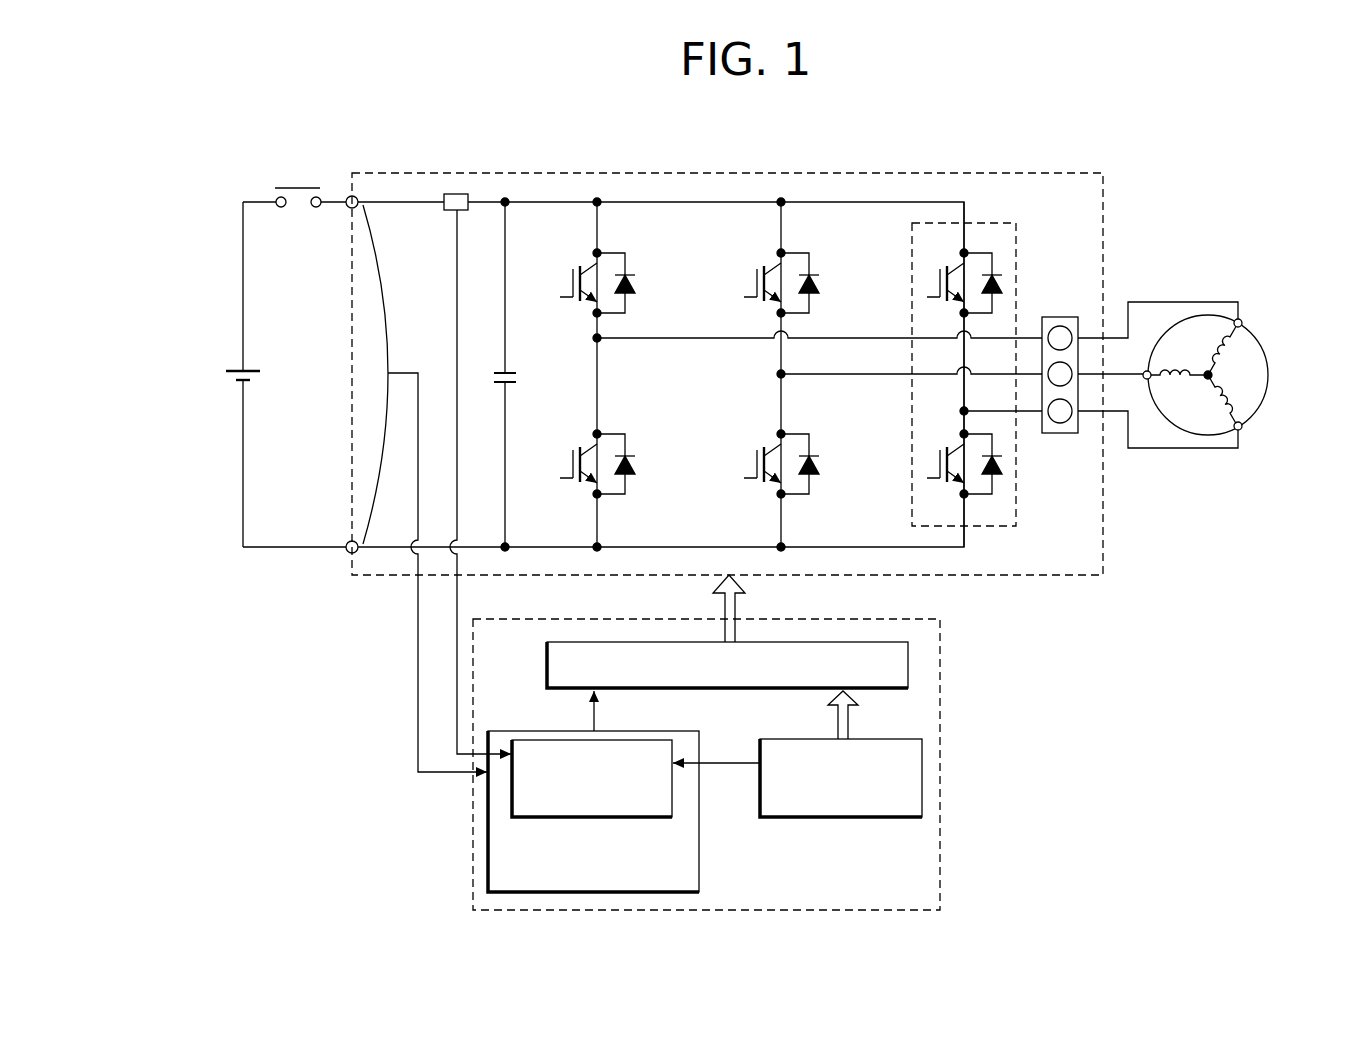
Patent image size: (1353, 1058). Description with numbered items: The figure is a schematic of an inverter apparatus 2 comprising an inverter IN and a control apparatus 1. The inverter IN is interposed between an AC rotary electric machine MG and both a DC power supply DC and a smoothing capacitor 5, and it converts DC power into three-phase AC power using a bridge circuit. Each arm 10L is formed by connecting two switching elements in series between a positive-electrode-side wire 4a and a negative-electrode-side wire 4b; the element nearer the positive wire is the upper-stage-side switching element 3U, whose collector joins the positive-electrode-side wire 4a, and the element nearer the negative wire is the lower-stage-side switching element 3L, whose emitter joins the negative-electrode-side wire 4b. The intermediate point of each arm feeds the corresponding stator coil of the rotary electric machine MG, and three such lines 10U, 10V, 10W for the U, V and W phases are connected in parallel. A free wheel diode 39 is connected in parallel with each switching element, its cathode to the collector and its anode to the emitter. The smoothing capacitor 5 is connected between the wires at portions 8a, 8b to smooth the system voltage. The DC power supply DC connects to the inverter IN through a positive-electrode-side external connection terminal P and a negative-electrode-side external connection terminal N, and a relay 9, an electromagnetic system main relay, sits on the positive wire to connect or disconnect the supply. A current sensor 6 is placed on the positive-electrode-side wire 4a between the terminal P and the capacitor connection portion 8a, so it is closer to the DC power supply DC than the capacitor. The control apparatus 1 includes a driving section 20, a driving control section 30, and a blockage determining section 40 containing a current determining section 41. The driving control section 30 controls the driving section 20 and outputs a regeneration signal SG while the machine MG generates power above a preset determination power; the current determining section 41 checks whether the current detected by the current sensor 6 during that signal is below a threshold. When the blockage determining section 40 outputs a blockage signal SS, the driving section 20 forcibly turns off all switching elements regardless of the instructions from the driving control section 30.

The control apparatus 1 is at (944, 640).
The inverter apparatus 2 is at (1141, 172).
The upper-stage-side switching element 3U is at (790, 222).
The lower-stage-side switching element 3L is at (648, 467).
The free wheel diode 39 is at (638, 288).
The positive-electrode-side wire 4a is at (568, 200).
The negative-electrode-side wire 4b is at (590, 550).
The smoothing capacitor 5 is at (512, 371).
The current sensor 6 is at (455, 194).
The portion of the wire connected to the smoothing capacitor 8a is at (508, 200).
The portion of the wire connected to the smoothing capacitor 8b is at (507, 551).
The relay 9 is at (308, 187).
The U-phase line 10U is at (589, 353).
The V-phase line 10V is at (773, 355).
The W-phase line 10W is at (956, 390).
The arm 10L is at (1016, 266).
The inverter IN is at (1030, 168).
The driving section 20 is at (908, 663).
The driving control section 30 is at (922, 762).
The blockage determining section 40 is at (621, 775).
The current determining section 41 is at (672, 778).
The DC power supply DC is at (236, 368).
The positive-electrode-side external connection terminal P is at (347, 207).
The negative-electrode-side external connection terminal N is at (347, 546).
The AC rotary electric machine MG is at (1262, 346).
The blockage signal SS is at (612, 711).
The regeneration signal SG is at (716, 750).